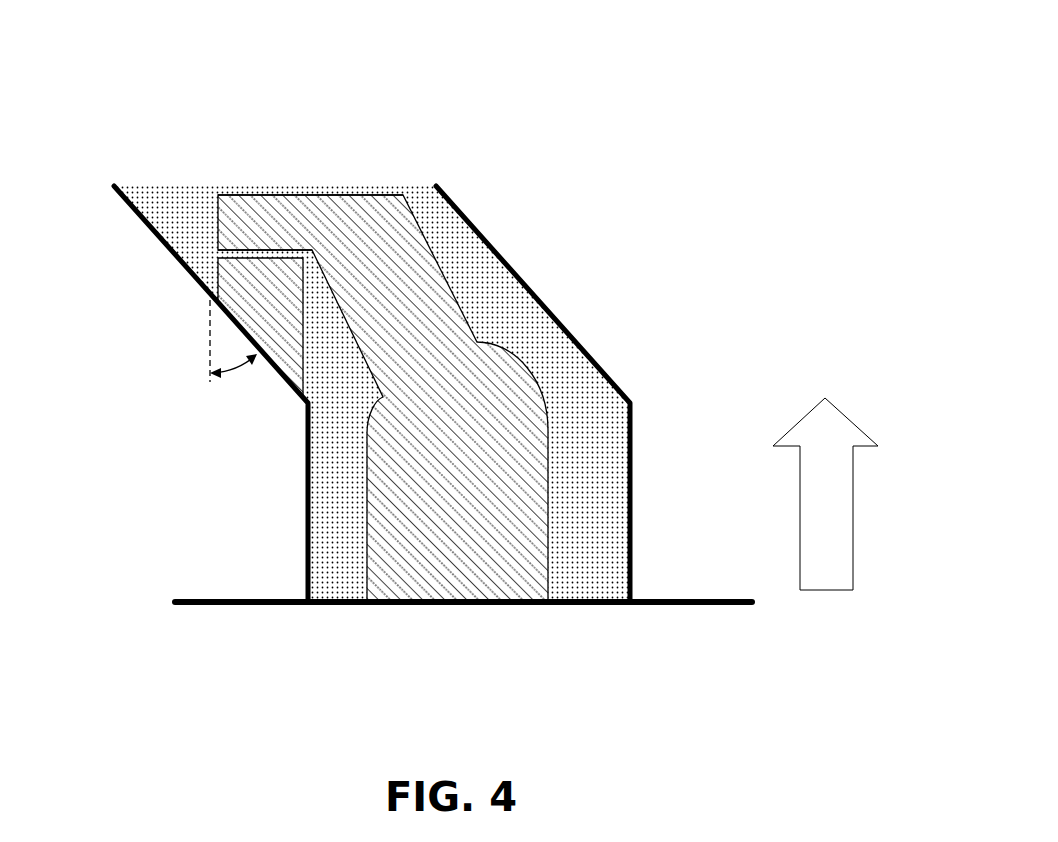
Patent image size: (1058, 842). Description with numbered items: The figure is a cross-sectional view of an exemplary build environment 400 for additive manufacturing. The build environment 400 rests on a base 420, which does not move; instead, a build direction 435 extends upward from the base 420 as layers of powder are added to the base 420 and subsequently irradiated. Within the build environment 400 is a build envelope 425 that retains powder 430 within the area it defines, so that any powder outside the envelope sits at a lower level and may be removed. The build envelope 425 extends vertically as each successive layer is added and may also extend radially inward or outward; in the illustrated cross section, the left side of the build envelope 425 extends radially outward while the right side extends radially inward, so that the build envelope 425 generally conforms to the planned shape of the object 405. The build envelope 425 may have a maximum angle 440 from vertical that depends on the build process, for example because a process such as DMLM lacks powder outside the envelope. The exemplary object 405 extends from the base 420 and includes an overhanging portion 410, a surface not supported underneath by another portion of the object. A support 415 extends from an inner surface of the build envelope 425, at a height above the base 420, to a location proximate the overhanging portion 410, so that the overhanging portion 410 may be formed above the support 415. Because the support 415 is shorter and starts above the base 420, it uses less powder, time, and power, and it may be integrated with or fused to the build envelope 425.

The build environment 400 is at (163, 85).
The object 405 is at (373, 195).
The overhanging portion 410 is at (248, 195).
The support 415 is at (218, 283).
The base 420 is at (655, 605).
The build envelope 425 is at (592, 362).
The powder 430 is at (513, 303).
The build direction 435 is at (853, 515).
The angle 440 is at (237, 368).